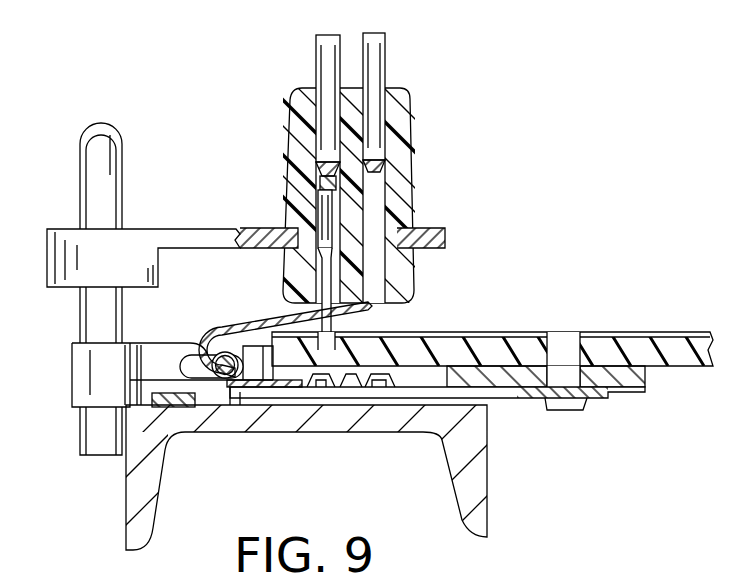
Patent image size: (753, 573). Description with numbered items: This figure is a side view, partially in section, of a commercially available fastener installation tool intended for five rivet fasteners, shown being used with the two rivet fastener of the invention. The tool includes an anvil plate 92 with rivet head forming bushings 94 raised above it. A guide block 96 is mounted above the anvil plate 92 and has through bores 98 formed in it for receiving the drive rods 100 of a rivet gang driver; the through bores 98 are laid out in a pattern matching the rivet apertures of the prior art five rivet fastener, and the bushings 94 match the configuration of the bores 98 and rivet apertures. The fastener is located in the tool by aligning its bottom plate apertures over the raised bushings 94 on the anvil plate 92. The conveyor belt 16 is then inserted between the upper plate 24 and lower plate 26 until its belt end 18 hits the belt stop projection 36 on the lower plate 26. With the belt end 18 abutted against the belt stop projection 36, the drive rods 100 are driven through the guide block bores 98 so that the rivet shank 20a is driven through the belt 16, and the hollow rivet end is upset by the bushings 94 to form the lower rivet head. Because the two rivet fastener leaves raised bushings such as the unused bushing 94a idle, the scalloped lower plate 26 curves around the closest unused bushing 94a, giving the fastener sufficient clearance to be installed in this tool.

The drive rods 100 is at (328, 55).
The guide block 96 is at (407, 125).
The through bores 98 is at (386, 193).
The shank 20a is at (323, 210).
The upper plate 24 is at (245, 330).
The belt end 18 is at (277, 337).
The conveyor belt 16 is at (672, 345).
The anvil plate 92 is at (497, 392).
The unused bushing 94a is at (378, 388).
The rivet head forming bushings 94 is at (345, 392).
The lower plate 26 is at (292, 393).
The belt stop projection 36 is at (263, 392).